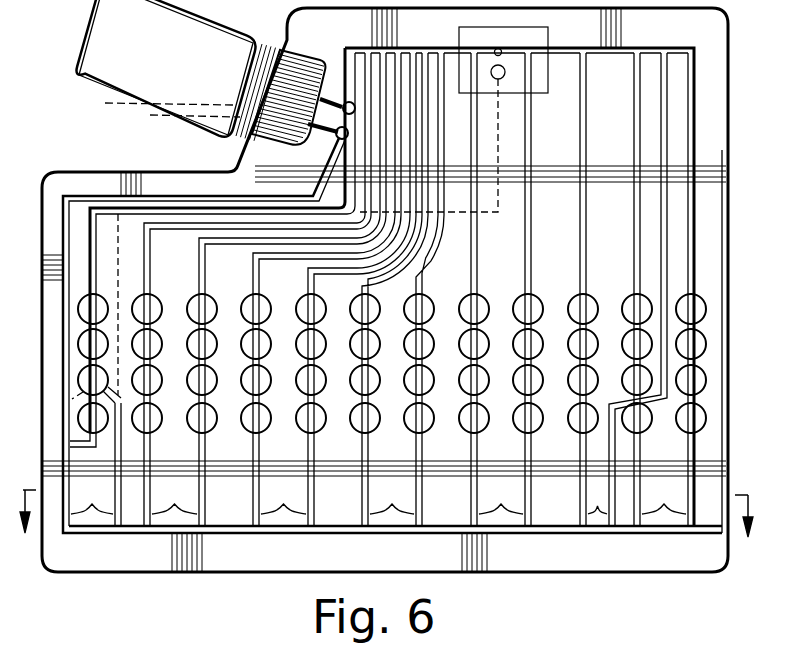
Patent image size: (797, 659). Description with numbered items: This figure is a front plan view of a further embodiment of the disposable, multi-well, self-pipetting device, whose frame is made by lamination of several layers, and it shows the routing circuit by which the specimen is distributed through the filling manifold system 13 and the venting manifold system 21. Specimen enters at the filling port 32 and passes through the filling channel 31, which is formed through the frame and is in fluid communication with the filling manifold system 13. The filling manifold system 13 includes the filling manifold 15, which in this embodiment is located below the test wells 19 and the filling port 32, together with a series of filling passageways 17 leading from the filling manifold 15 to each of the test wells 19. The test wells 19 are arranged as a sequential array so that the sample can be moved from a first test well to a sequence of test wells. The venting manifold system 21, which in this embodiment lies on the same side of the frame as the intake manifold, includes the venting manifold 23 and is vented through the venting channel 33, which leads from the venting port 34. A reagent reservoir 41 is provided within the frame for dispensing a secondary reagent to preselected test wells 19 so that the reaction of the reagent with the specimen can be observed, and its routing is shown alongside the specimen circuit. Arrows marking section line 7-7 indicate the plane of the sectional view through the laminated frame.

The section line 7- 7 is at (383, 527).
The filling manifold system 13 is at (328, 540).
The filling manifold 15 is at (443, 528).
The filling passageways 17 is at (600, 537).
The test wells 19 is at (86, 421).
The venting manifold system 21 is at (702, 108).
The venting manifold 23 is at (630, 52).
The filling channel 31 is at (323, 127).
The filling port 32 is at (285, 146).
The venting channel 33 is at (348, 50).
The venting port 34 is at (323, 65).
The reagent reservoir 41 is at (535, 39).